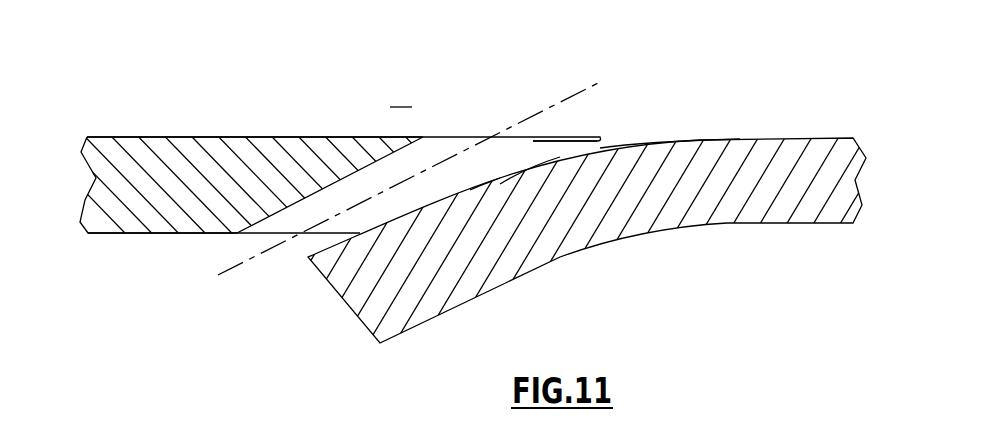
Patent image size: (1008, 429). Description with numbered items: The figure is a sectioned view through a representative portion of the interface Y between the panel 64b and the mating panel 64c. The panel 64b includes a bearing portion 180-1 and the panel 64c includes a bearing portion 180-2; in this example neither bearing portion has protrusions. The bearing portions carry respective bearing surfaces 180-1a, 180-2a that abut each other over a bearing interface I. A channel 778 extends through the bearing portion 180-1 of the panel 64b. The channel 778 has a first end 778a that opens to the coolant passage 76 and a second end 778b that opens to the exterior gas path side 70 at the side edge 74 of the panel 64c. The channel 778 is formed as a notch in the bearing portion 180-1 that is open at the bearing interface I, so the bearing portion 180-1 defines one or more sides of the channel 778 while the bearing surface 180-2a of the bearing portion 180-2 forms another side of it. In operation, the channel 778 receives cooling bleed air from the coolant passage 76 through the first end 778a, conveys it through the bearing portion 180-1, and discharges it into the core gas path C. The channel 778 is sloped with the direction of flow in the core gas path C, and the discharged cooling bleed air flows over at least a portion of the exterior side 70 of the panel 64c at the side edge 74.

The panel 64b is at (196, 156).
The panel 64c is at (728, 148).
The exterior gas path side 70 is at (310, 137).
The side edge 74 is at (633, 128).
The coolant passage 76 is at (186, 267).
The bearing portion 180-1 is at (316, 211).
The bearing surface 180-1a is at (505, 180).
The bearing portion 180-2 is at (573, 229).
The bearing surface 180-2a is at (530, 164).
The channel 778 is at (348, 220).
The first end 778a is at (272, 220).
The second end 778b is at (533, 138).
The core gas path C is at (401, 94).
The bearing interface I is at (468, 176).
The interface Y is at (182, 350).